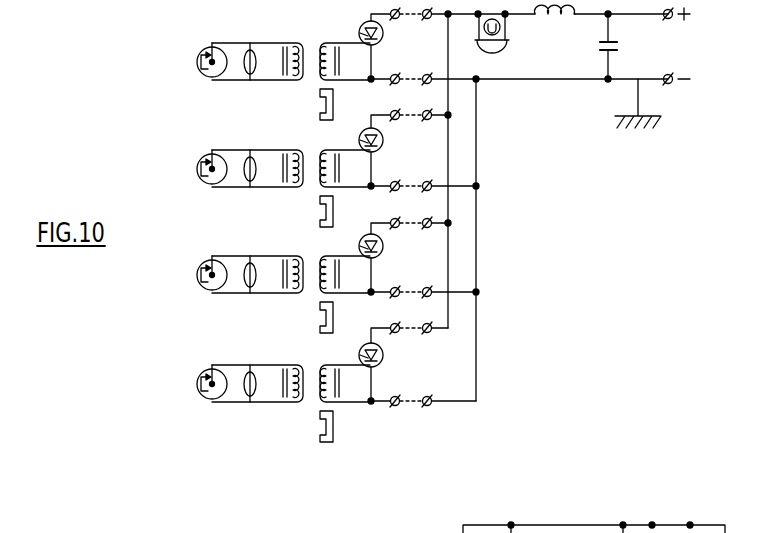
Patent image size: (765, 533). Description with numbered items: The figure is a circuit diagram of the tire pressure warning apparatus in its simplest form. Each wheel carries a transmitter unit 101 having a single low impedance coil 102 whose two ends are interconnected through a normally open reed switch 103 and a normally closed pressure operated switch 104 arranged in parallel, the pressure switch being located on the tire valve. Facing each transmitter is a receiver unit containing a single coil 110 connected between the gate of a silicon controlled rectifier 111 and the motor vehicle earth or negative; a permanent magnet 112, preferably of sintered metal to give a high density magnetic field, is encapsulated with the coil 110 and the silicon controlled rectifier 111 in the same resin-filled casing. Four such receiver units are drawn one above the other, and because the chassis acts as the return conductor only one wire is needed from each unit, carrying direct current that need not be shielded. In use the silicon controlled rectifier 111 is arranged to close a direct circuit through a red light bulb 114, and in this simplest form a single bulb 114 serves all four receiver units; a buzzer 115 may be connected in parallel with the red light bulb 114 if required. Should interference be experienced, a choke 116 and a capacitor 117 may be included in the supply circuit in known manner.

The transmitter unit 101 is at (256, 37).
The low impedance coil 102 is at (298, 76).
The reed switch 103 is at (248, 70).
The pressure operated switch 104 is at (197, 64).
The coil 110 is at (328, 46).
The silicon controlled rectifier 111 is at (384, 33).
The permanent magnet 112 is at (333, 106).
The red light bulb 114 is at (505, 33).
The buzzer 115 is at (496, 50).
The choke 116 is at (554, 17).
The capacitor 117 is at (617, 46).